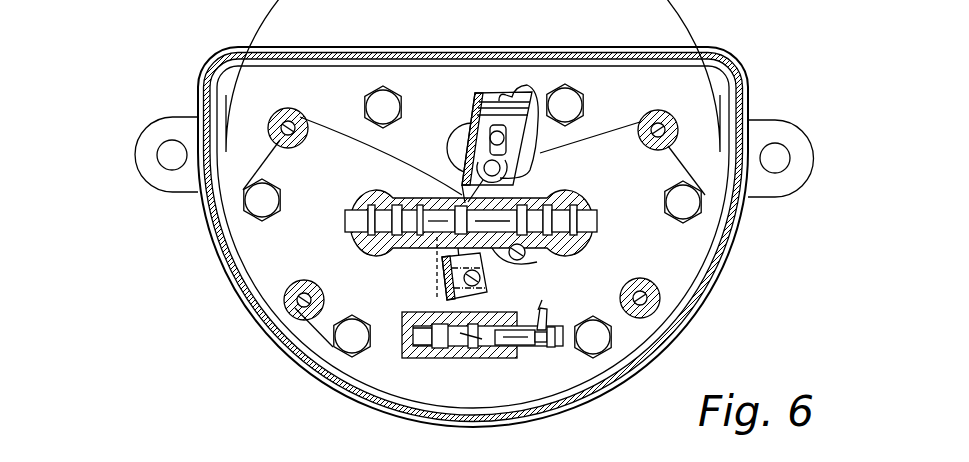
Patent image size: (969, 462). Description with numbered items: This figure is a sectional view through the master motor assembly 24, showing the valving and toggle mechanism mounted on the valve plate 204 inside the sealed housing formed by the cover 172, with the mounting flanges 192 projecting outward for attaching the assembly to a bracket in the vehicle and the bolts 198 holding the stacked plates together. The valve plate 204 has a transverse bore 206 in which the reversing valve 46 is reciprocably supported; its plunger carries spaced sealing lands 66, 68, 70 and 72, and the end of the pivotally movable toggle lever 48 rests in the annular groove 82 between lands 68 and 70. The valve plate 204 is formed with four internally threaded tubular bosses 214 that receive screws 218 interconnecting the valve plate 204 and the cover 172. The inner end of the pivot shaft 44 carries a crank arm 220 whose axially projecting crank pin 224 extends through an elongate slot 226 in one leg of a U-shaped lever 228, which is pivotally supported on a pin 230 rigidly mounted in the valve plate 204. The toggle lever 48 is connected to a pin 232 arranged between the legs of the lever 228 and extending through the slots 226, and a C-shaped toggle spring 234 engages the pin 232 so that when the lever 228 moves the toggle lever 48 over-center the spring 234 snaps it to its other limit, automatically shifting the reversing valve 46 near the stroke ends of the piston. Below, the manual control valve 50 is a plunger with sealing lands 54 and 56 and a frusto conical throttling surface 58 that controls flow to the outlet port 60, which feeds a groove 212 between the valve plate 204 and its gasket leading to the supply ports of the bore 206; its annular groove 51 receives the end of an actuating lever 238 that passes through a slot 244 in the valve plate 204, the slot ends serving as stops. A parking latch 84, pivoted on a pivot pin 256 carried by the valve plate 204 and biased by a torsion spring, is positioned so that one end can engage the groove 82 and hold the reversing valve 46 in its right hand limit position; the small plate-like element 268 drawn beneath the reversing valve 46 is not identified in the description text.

The master motor assembly 24 is at (198, 252).
The pivot shaft 44 is at (458, 147).
The reversing valve 46 is at (345, 220).
The toggle lever 48 is at (464, 180).
The control valve 50 is at (557, 333).
The annular groove 51 is at (552, 347).
The sealing land 54 is at (536, 342).
The sealing land 56 is at (412, 331).
The frusto conical throttling surface 58 is at (488, 342).
The outlet port 60 is at (445, 348).
The sealing land 66 is at (360, 212).
The sealing land 68 is at (402, 208).
The sealing land 70 is at (507, 212).
The sealing land 72 is at (598, 218).
The annular groove 82 is at (455, 207).
The parking latch 84 is at (505, 258).
The cover 172 is at (225, 68).
The mounting flanges 192 is at (160, 123).
The bolts 198 is at (383, 105).
The valve plate 204 is at (270, 273).
The transverse bore 206 is at (605, 233).
The groove 212 is at (433, 302).
The tubular bosses 214 is at (290, 125).
The screws 218 is at (288, 128).
The crank arm 220 is at (462, 110).
The crank pin 224 is at (504, 138).
The elongate slot 226 is at (481, 100).
The U-shaped lever 228 is at (528, 100).
The pin 230 is at (460, 275).
The pin 232 is at (500, 166).
The C-shaped toggle spring 234 is at (537, 152).
The actuating lever 238 is at (540, 310).
The slot 244 is at (548, 317).
The pivot pin 256 is at (537, 262).
The plate 268 is at (490, 285).